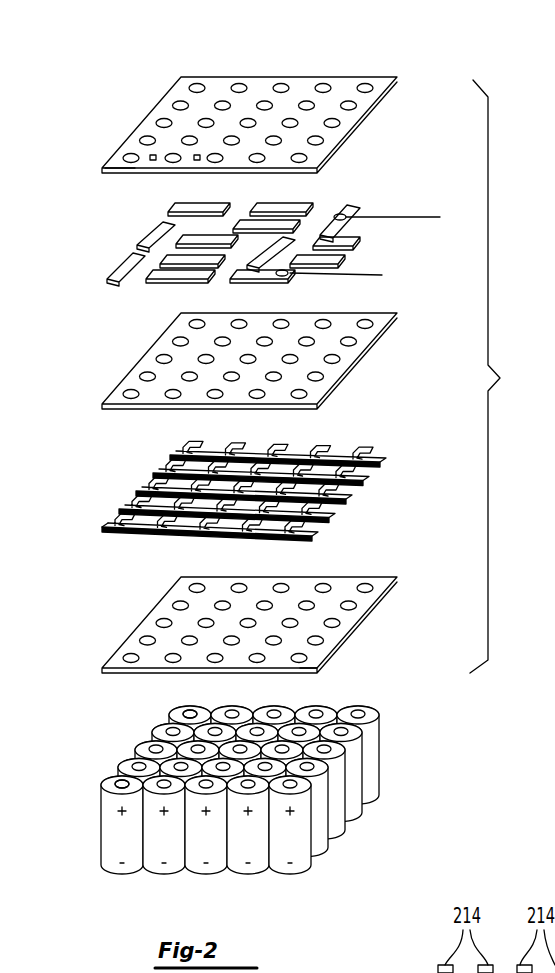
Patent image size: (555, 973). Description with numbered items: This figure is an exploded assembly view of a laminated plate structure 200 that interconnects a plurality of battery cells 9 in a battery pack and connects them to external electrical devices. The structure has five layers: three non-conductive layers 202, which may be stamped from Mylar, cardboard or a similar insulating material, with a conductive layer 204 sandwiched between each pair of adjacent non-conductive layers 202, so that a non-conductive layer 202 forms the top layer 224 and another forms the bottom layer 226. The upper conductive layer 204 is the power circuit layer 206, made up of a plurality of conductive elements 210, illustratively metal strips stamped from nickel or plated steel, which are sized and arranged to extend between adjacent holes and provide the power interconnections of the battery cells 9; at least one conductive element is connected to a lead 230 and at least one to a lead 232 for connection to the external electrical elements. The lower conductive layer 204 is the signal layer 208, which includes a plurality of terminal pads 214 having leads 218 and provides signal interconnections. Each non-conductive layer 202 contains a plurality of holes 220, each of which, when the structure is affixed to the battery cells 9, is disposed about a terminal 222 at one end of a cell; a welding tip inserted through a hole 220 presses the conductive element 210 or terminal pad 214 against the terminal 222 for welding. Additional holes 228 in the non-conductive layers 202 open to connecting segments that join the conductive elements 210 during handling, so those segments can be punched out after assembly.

The laminated plate structure 200 is at (503, 376).
The non-conductive layer 202 is at (377, 78).
The conductive layer 204 is at (380, 251).
The power circuit layer 206 is at (376, 194).
The signal layer 208 is at (388, 472).
The conductive element 210 is at (131, 258).
The terminal pad 214 is at (106, 528).
The lead 218 is at (313, 538).
The hole 220 is at (131, 158).
The terminal 222 is at (122, 780).
The top layer 224 is at (120, 167).
The bottom layer 226 is at (317, 669).
The hole 228 is at (195, 160).
The lead 230 is at (413, 217).
The lead 232 is at (362, 276).
The battery cell 9 is at (117, 870).